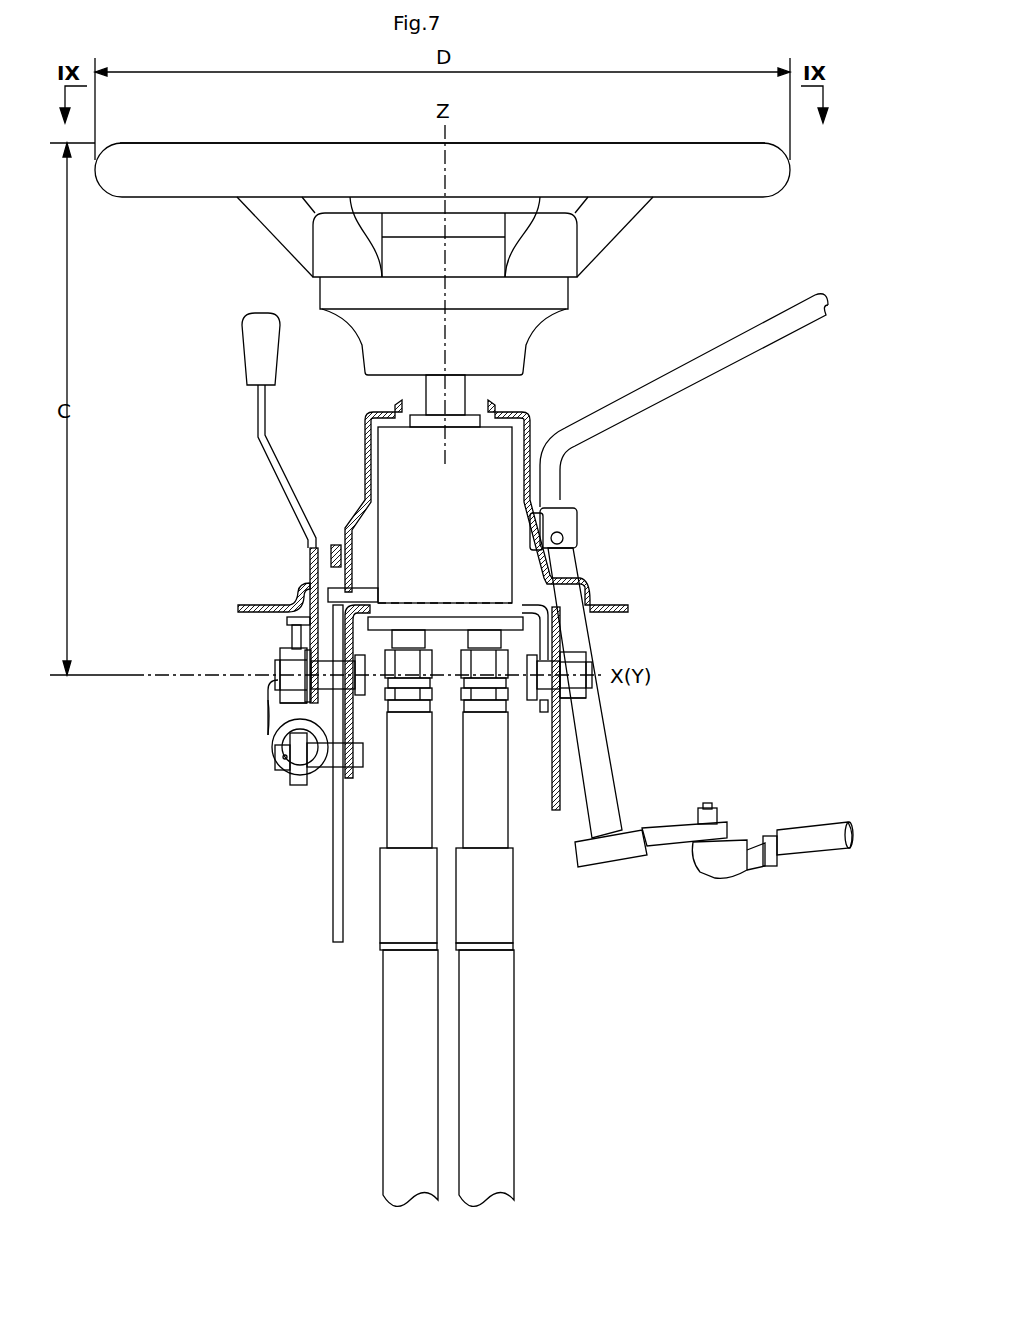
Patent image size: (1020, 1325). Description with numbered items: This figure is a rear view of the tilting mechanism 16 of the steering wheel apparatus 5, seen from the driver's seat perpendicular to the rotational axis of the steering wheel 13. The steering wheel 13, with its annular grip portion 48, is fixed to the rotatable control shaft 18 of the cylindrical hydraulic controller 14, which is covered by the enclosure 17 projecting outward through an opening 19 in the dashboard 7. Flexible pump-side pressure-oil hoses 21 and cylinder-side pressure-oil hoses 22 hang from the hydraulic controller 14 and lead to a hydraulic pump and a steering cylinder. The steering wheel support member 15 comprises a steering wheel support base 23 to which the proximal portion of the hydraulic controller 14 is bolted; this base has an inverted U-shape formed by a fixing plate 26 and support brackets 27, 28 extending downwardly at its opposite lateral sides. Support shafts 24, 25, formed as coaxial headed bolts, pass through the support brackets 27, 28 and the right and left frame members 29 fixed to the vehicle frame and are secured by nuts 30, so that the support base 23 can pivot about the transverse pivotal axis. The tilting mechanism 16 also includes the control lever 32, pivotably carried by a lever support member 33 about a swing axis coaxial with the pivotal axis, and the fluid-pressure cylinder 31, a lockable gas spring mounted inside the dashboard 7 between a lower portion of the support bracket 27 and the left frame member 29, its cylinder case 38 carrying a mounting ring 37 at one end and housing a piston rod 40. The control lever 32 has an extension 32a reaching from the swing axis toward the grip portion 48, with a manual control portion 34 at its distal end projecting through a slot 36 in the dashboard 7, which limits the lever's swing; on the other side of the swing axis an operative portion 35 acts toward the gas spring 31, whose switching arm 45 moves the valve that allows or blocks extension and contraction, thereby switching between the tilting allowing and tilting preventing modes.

The steering wheel apparatus 5 is at (697, 120).
The grip portion 48 is at (537, 148).
The steering wheel 13 is at (292, 232).
The rotatable control shaft 18 is at (458, 388).
The enclosure 17 is at (366, 440).
The hydraulic controller 14 is at (388, 468).
The opening 19 is at (344, 553).
The extension 32a is at (308, 492).
The control lever 32 is at (233, 466).
The manual control portion 34 is at (248, 362).
The slot 36 is at (312, 562).
The dashboard 7 is at (612, 606).
The operative portion 35 is at (298, 616).
The switching arm 45 is at (290, 630).
The piston rod 40 is at (284, 648).
The support shaft 24 is at (280, 672).
The support shaft 25 is at (562, 654).
The lever support member 33 is at (435, 666).
The cylinder case 38 is at (265, 694).
The nut 30 is at (292, 706).
The fluid-pressure cylinder 31 is at (262, 736).
The mounting ring 37 is at (297, 777).
The support bracket 27 is at (352, 780).
The frame member 29 is at (333, 845).
The fixing plate 26 is at (535, 600).
The support bracket 28 is at (541, 705).
The steering wheel support member 15 is at (558, 576).
The steering wheel support base 23 is at (679, 435).
The tilting mechanism 16 is at (590, 715).
The pump-side pressure-oil hose 21 is at (393, 1063).
The cylinder-side pressure-oil hose 22 is at (503, 1052).